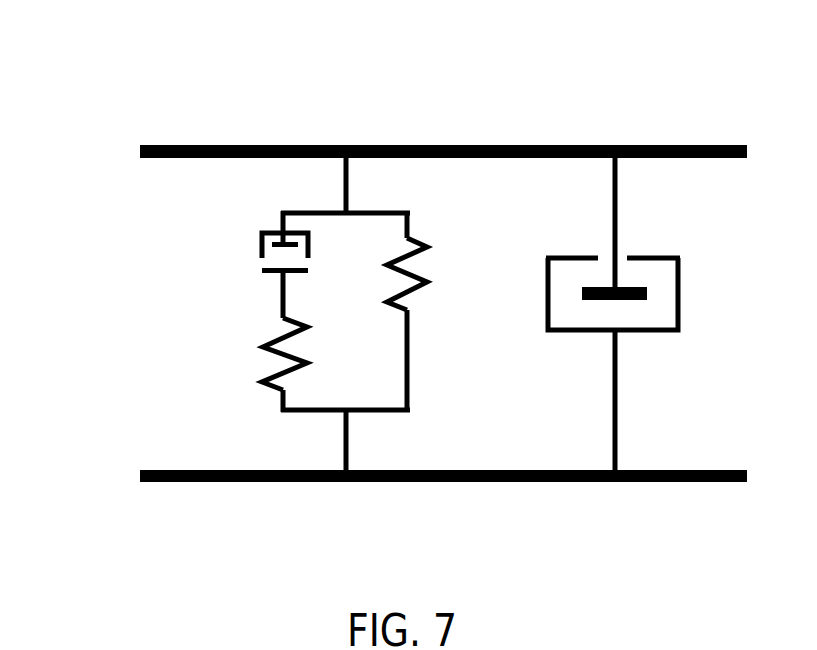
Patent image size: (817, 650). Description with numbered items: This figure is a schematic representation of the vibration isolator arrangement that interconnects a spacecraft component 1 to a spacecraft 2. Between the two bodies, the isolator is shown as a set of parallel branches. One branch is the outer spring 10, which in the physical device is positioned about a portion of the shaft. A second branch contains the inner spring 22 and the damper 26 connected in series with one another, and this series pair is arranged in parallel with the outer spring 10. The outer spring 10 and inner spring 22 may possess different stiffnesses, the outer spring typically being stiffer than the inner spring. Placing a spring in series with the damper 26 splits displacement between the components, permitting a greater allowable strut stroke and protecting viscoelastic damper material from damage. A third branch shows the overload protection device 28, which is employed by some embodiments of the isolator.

The spacecraft component 1 is at (340, 147).
The spacecraft 2 is at (312, 482).
The outer spring 10 is at (410, 312).
The inner spring 22 is at (273, 348).
The damper 26 is at (257, 255).
The overload protection device 28 is at (682, 303).